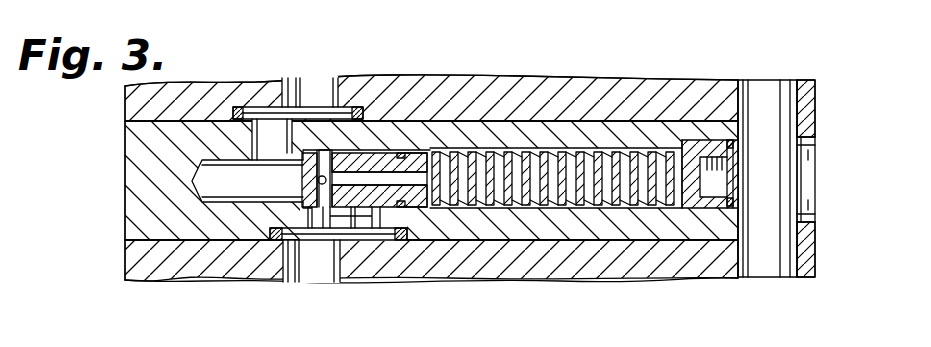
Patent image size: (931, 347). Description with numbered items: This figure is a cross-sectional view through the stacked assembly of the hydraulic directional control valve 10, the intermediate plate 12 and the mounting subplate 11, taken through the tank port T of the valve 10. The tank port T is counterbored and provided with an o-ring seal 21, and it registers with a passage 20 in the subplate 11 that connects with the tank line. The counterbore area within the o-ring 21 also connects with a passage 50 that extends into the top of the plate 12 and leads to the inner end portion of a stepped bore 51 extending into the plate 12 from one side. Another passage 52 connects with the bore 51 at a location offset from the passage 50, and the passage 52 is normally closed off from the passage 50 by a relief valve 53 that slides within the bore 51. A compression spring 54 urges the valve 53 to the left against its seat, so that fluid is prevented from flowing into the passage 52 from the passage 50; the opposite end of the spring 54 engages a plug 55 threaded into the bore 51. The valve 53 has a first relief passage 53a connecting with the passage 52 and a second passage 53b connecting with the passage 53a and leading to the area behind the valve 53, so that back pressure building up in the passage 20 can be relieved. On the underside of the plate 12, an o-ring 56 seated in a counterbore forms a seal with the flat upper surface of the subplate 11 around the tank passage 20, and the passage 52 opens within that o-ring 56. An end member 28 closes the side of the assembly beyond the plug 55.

The hydraulic directional control valve 10 is at (543, 79).
The mounting subplate 11 is at (124, 262).
The plate 12 is at (124, 142).
The passage 20 is at (292, 284).
The o-ring seal 21 is at (265, 108).
The tank port T is at (320, 85).
The end plate 28 is at (762, 94).
The passage 50 is at (268, 140).
The stepped bore 51 is at (233, 202).
The passage 52 is at (312, 222).
The relief valve 53 is at (370, 158).
The first relief passage 53a is at (323, 160).
The second passage 53b is at (390, 184).
The compression spring 54 is at (458, 150).
The plug 55 is at (734, 150).
The o-ring 56 is at (338, 240).